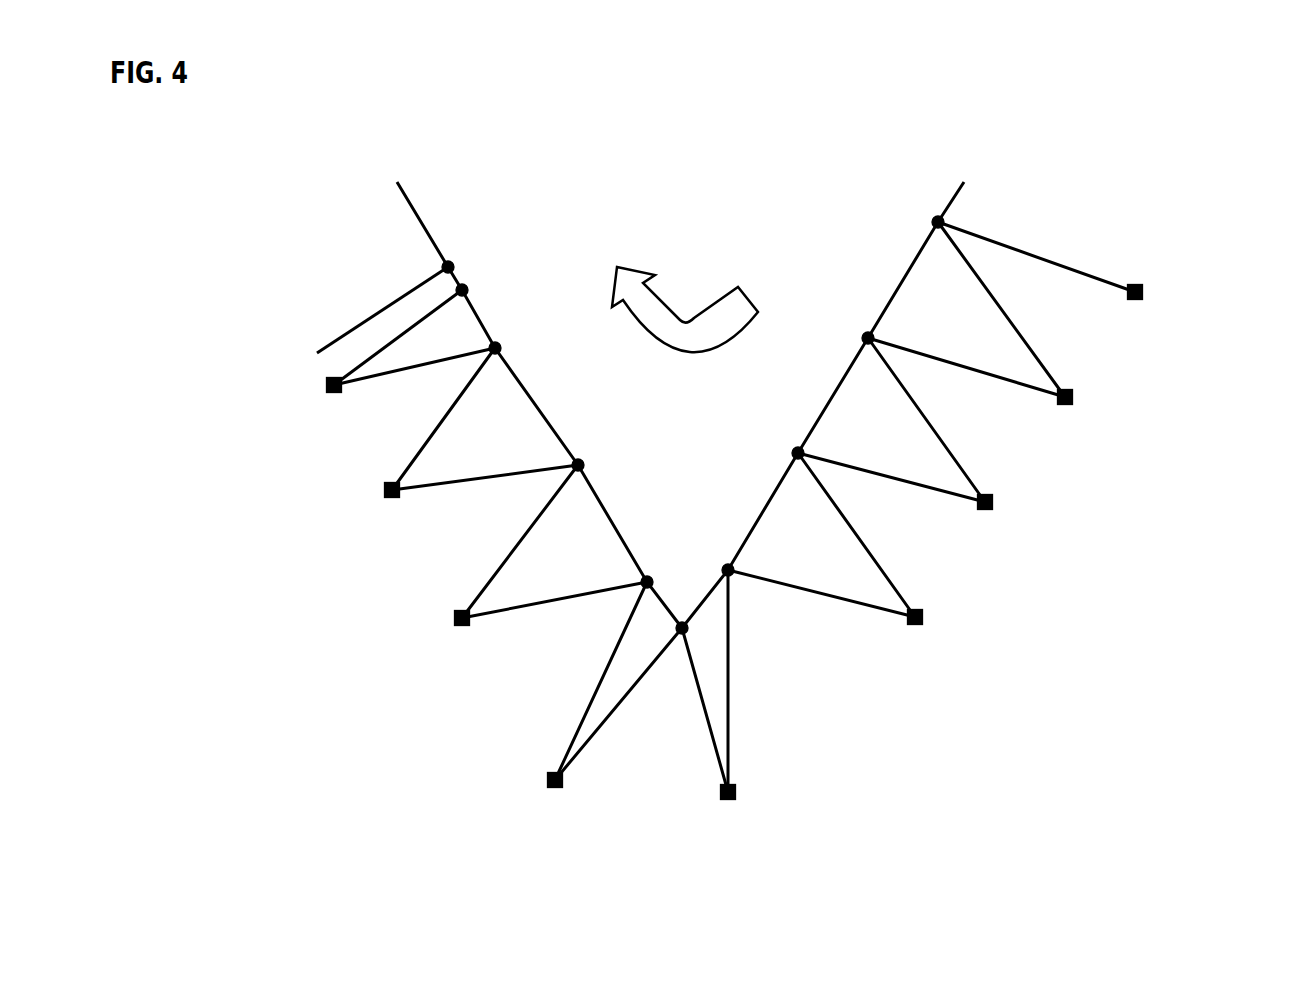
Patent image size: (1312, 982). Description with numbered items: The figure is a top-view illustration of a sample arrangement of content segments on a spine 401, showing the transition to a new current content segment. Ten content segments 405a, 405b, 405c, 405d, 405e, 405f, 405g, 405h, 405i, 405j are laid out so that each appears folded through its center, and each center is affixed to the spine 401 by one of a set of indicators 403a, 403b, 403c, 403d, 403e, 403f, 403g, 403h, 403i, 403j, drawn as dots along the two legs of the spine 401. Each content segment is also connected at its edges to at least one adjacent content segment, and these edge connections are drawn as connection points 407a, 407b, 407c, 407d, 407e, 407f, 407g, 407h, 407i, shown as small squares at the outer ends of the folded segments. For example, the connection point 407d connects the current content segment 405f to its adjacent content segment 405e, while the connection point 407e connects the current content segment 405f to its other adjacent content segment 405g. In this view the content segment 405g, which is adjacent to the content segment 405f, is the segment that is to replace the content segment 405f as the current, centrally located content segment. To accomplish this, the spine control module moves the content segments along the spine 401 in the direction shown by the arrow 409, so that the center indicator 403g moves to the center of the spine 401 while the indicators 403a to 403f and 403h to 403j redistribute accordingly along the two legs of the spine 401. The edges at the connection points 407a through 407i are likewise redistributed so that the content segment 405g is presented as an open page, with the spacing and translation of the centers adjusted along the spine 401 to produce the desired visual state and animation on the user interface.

The spine 401 is at (900, 286).
The indicator 403a is at (453, 261).
The indicator 403b is at (465, 284).
The indicator 403c is at (499, 342).
The indicator 403d is at (582, 459).
The indicator 403e is at (648, 576).
The indicator 403f is at (682, 622).
The indicator 403g is at (727, 564).
The indicator 403h is at (797, 447).
The indicator 403i is at (866, 332).
The indicator 403j is at (938, 215).
The content segment 405a is at (398, 295).
The content segment 405b is at (337, 375).
The content segment 405c is at (383, 425).
The content segment 405d is at (465, 530).
The content segment 405e is at (548, 658).
The content segment 405f is at (640, 775).
The content segment 405g is at (805, 668).
The content segment 405h is at (922, 553).
The content segment 405i is at (992, 425).
The content segment 405j is at (1072, 308).
The connection point 407a is at (330, 386).
The connection point 407b is at (390, 490).
The connection point 407c is at (460, 618).
The connection point 407d is at (552, 780).
The connection point 407e is at (735, 794).
The connection point 407f is at (922, 617).
The connection point 407g is at (993, 502).
The connection point 407h is at (1073, 397).
The connection point 407i is at (1143, 292).
The arrow 409 is at (685, 309).